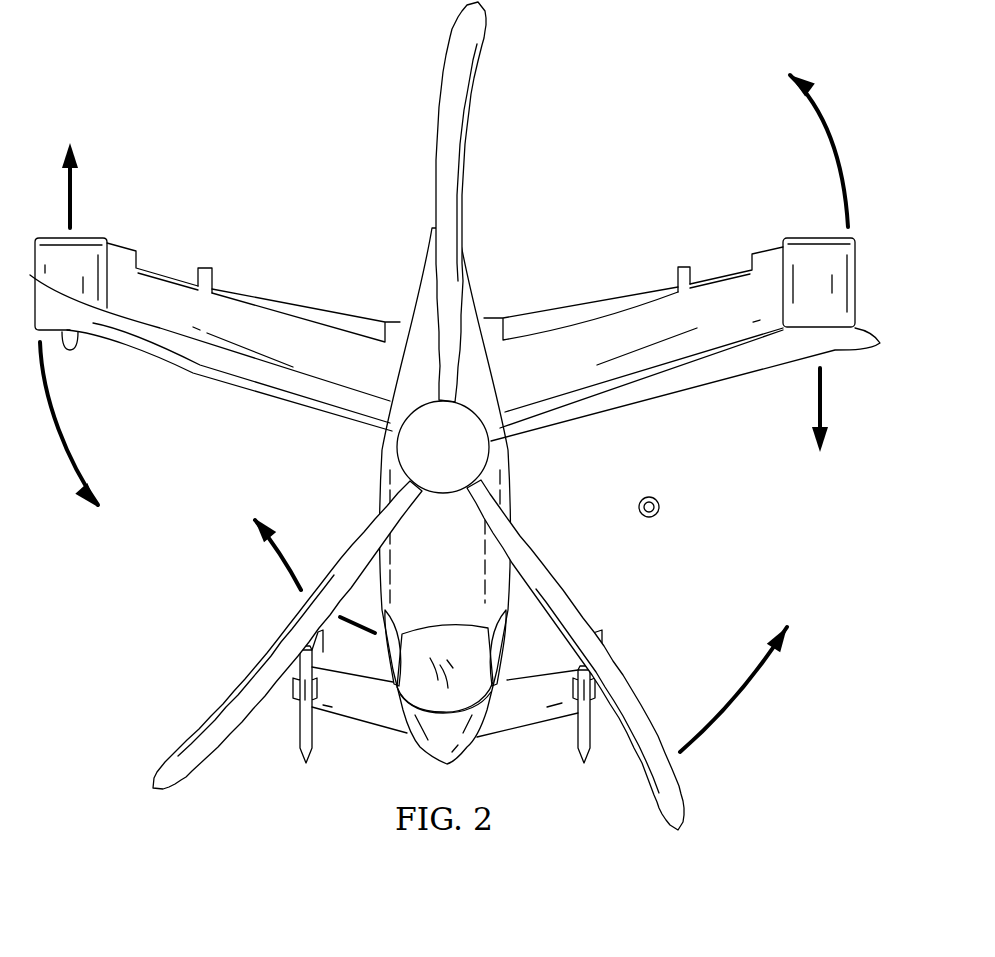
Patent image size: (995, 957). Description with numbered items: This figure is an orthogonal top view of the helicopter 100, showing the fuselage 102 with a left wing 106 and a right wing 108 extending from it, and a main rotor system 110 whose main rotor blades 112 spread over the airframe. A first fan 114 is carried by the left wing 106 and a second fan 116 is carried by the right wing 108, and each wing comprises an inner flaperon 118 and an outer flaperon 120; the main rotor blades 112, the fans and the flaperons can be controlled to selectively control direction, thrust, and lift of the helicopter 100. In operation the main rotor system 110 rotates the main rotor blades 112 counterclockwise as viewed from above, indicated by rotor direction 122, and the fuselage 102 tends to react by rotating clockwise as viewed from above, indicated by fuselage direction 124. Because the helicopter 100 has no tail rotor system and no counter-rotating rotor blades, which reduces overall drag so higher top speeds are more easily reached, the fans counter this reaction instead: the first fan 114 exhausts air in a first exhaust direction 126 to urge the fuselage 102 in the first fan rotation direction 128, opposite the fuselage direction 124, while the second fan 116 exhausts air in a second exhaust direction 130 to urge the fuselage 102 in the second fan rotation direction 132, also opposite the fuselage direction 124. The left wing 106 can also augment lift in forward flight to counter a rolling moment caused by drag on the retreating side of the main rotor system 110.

The helicopter 100 is at (597, 115).
The fuselage 102 is at (512, 487).
The left wing 106 is at (660, 312).
The right wing 108 is at (228, 311).
The main rotor system 110 is at (394, 464).
The main rotor blades 112 is at (437, 107).
The first fan 114 is at (813, 238).
The second fan 116 is at (56, 239).
The inner flaperon 118 is at (293, 303).
The outer flaperon 120 is at (157, 267).
The rotor direction 122 is at (738, 702).
The fuselage direction 124 is at (278, 565).
The first exhaust direction 126 is at (818, 403).
The first fan rotation direction 128 is at (817, 137).
The second exhaust direction 130 is at (72, 197).
The second fan rotation direction 132 is at (62, 420).